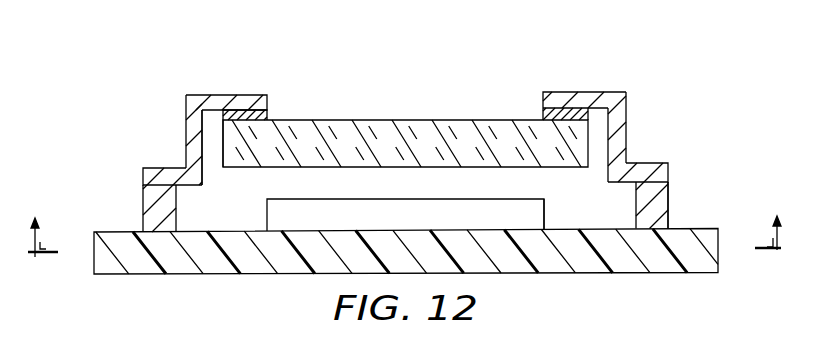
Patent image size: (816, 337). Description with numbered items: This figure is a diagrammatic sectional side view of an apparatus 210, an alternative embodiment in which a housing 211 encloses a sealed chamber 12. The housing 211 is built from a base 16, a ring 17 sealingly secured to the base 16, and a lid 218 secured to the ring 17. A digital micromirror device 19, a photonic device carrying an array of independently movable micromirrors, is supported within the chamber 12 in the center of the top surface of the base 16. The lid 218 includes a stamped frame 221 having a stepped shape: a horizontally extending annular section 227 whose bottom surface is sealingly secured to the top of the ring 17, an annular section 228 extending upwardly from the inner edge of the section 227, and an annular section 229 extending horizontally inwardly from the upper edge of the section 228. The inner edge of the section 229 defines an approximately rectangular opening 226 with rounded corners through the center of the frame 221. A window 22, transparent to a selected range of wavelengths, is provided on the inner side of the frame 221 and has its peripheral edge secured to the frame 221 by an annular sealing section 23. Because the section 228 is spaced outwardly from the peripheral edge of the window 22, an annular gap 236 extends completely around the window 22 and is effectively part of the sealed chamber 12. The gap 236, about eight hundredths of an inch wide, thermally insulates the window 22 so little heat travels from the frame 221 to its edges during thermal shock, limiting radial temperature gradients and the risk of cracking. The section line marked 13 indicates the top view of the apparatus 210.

The sealed chamber 12 is at (563, 222).
The section line 13- 13 is at (405, 221).
The base 16 is at (185, 268).
The ring 17 is at (147, 210).
The digital micromirror device 19 is at (527, 199).
The window 22 is at (396, 119).
The annular sealing section 23 is at (267, 110).
The apparatus 210 is at (393, 100).
The housing 211 is at (686, 203).
The lid 218 is at (640, 109).
The frame 221 is at (673, 165).
The opening 226 is at (545, 107).
The annular section 227 is at (152, 173).
The annular section 228 is at (190, 121).
The annular section 229 is at (234, 102).
The annular gap 236 is at (218, 172).